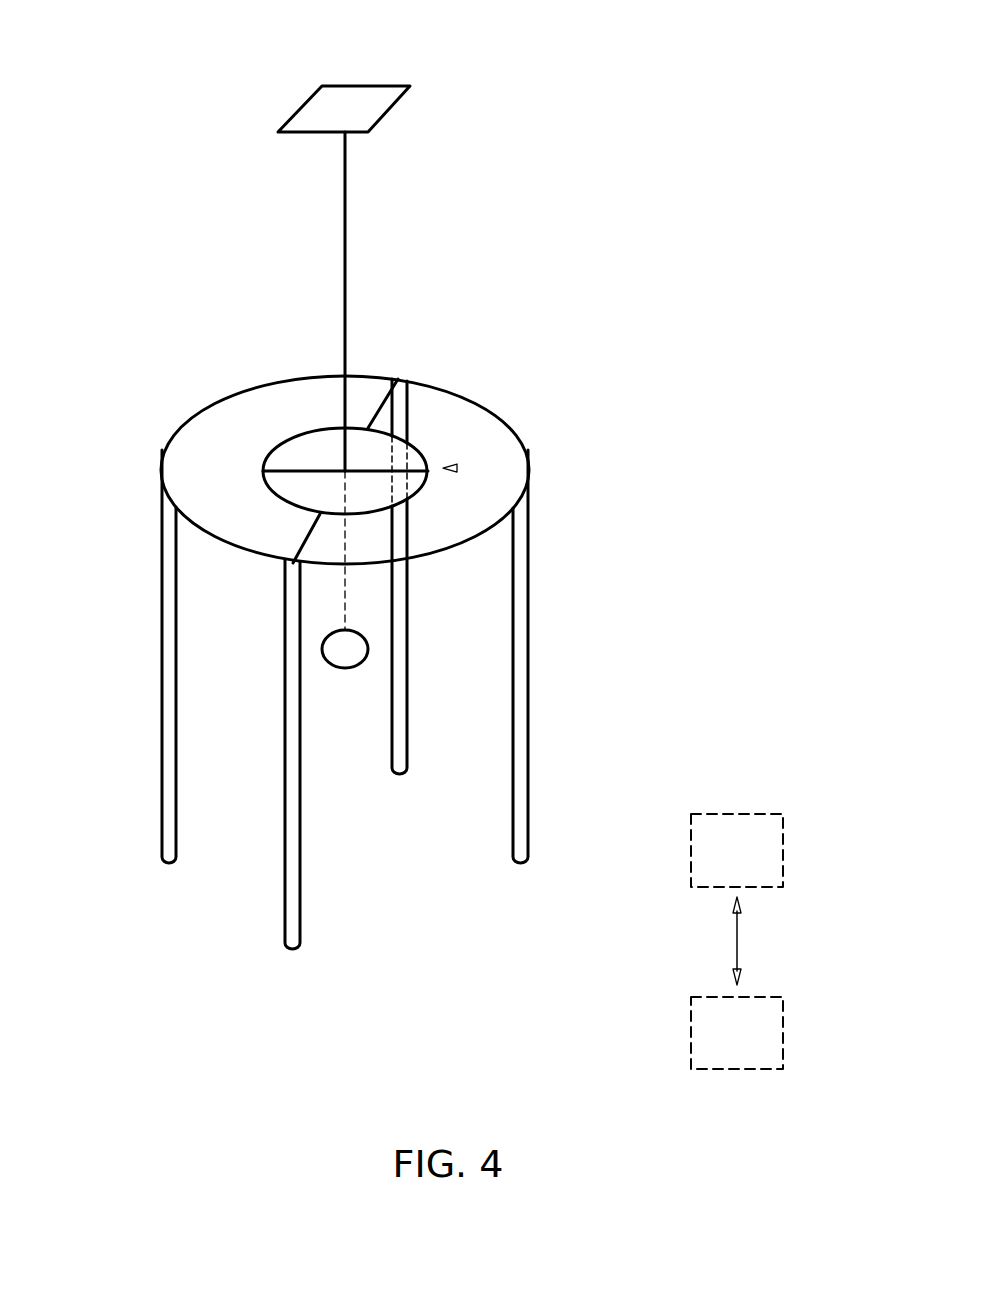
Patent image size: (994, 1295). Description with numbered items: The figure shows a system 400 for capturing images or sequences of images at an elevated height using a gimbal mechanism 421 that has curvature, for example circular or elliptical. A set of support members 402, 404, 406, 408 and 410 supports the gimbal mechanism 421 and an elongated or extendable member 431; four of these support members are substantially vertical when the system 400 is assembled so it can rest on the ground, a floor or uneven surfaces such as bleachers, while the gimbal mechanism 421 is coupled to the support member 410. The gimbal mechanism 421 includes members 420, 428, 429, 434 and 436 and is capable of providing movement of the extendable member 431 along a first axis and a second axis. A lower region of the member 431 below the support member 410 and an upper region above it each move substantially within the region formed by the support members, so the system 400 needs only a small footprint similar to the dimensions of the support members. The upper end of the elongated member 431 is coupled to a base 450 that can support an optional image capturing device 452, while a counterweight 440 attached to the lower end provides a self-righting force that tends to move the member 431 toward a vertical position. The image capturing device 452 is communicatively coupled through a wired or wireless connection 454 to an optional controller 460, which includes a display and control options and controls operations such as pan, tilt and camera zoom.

The system 400 is at (690, 88).
The base 450 is at (393, 105).
The elongated member 431 is at (375, 245).
The member 429 is at (375, 410).
The support member 410 is at (457, 388).
The member 436 is at (298, 470).
The member 420 is at (416, 448).
The gimbal mechanism 421 is at (457, 468).
The member 434 is at (363, 473).
The member 428 is at (297, 537).
The support member 408 is at (409, 632).
The support member 402 is at (530, 658).
The support member 406 is at (158, 668).
The support member 404 is at (283, 835).
The counterweight 440 is at (343, 668).
The image capturing device 452 is at (717, 867).
The wired or wireless connection 454 is at (737, 943).
The controller 460 is at (717, 1049).